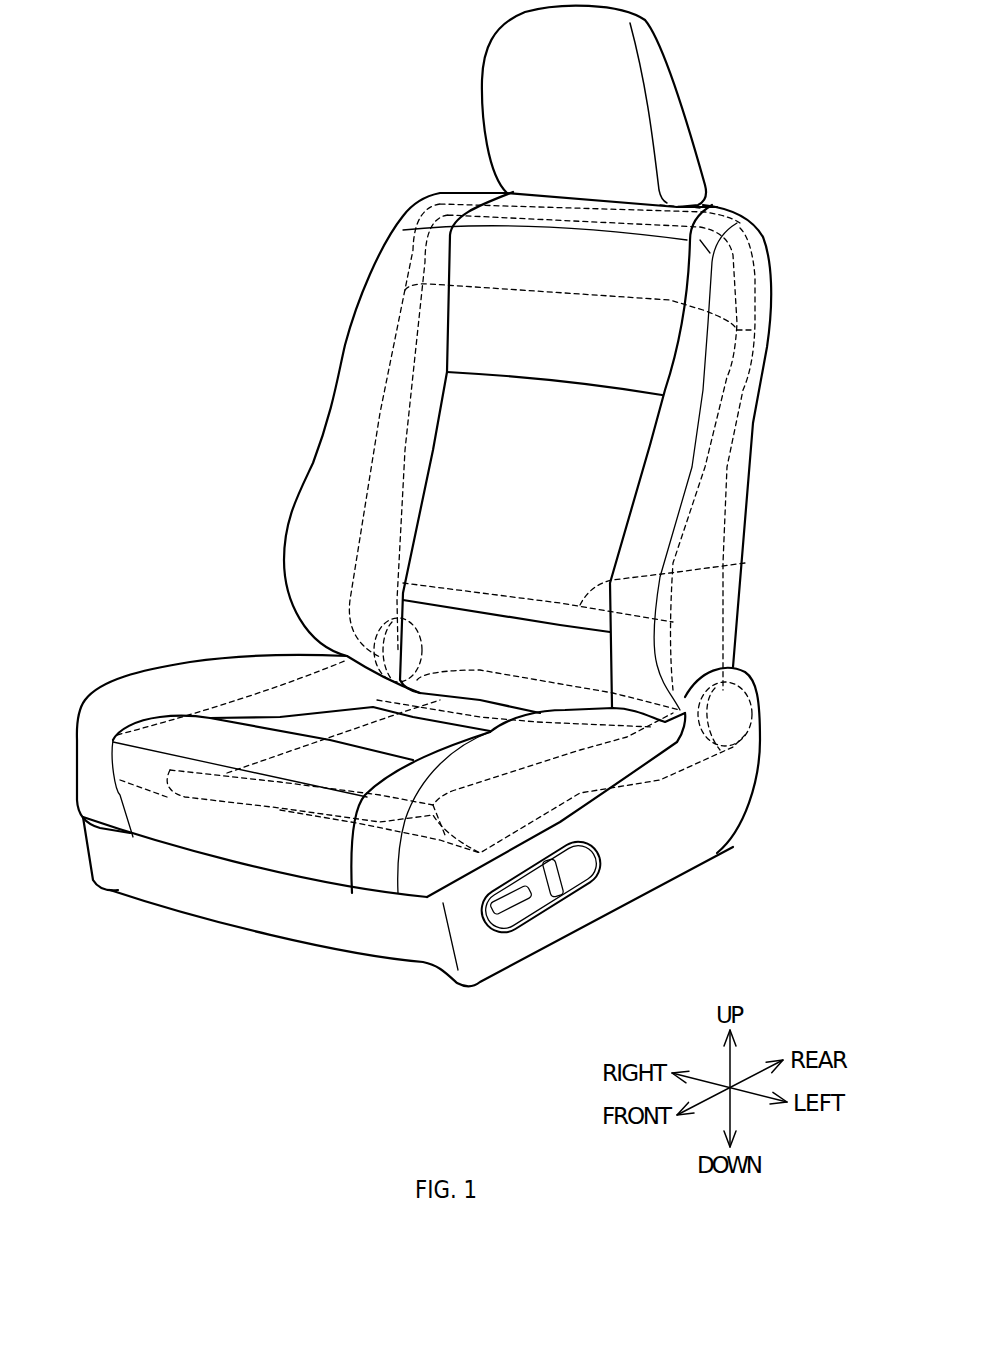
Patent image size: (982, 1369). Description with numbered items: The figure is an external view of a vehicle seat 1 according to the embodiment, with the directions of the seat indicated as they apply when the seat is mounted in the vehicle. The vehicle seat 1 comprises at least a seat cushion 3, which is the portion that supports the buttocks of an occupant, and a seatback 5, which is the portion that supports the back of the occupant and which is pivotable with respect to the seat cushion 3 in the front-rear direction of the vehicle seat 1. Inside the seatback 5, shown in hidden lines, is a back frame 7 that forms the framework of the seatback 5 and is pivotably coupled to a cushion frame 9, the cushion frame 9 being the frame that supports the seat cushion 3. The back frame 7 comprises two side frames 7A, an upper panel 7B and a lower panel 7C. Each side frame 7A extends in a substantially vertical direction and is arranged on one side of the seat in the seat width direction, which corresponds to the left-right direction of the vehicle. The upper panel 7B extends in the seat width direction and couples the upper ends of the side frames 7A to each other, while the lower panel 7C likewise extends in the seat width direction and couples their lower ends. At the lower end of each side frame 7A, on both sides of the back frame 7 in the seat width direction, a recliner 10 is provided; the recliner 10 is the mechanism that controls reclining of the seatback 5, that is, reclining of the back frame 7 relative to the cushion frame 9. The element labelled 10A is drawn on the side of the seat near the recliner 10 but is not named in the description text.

The vehicle seat 1 is at (322, 182).
The seat cushion 3 is at (250, 690).
The seatback 5 is at (397, 262).
The back frame 7 is at (748, 238).
The side frame 7A is at (740, 437).
The upper panel 7B is at (677, 207).
The lower panel 7C is at (745, 563).
The cushion frame 9 is at (455, 845).
The recliner 10 is at (378, 640).
The operation switch 10A is at (597, 860).